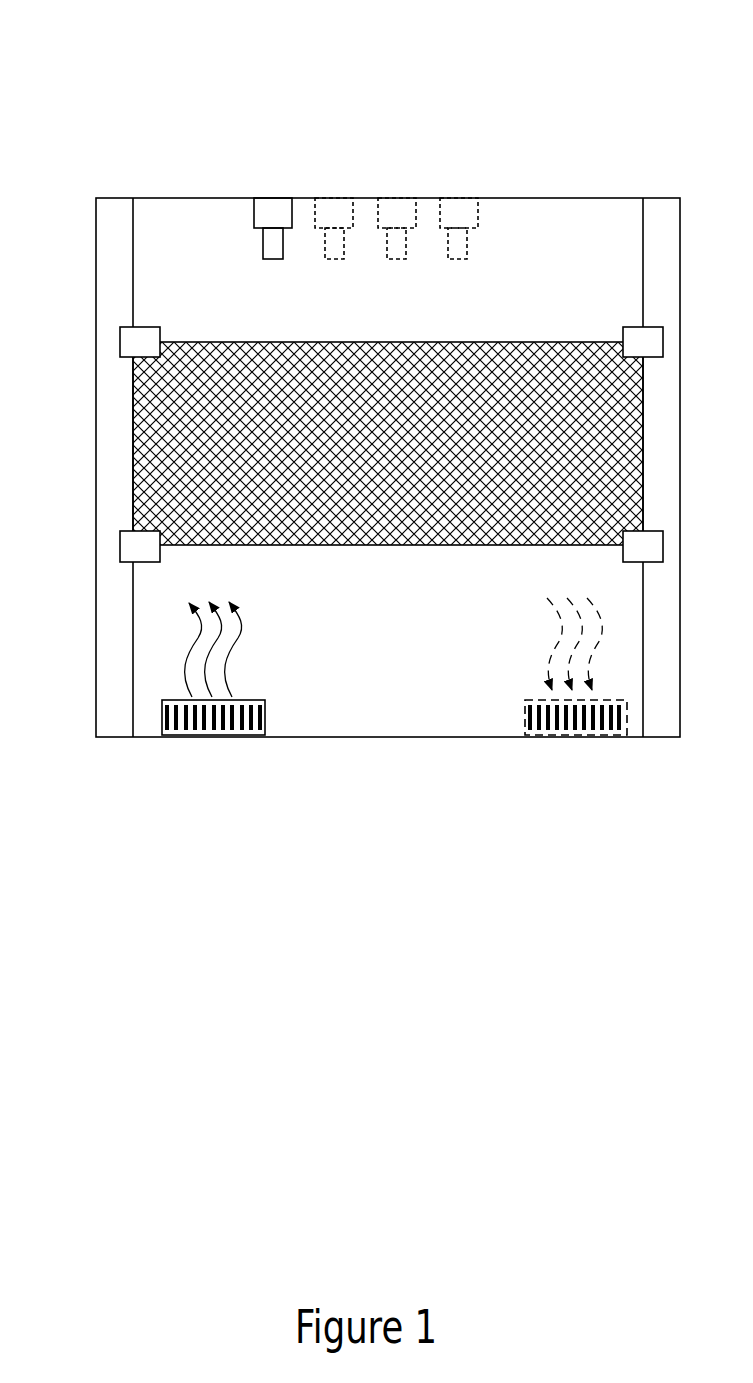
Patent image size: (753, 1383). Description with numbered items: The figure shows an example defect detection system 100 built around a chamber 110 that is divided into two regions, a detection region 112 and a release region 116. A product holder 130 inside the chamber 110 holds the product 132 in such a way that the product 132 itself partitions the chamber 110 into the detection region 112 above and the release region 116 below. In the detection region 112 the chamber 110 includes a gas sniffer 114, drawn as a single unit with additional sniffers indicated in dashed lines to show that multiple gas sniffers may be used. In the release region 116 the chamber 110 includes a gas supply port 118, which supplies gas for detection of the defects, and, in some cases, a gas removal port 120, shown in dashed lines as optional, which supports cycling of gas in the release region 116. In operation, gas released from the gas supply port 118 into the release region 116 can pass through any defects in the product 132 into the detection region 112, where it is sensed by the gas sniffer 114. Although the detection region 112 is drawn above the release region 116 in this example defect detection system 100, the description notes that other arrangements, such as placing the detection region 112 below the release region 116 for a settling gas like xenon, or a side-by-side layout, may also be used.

The defect detection system 100 is at (76, 56).
The chamber 110 is at (99, 172).
The detection region 112 is at (609, 233).
The gas sniffer 114 is at (250, 211).
The release region 116 is at (609, 583).
The gas supply port 118 is at (265, 690).
The gas removal port 120 is at (519, 689).
The product holder 130 is at (166, 325).
The product 132 is at (359, 340).